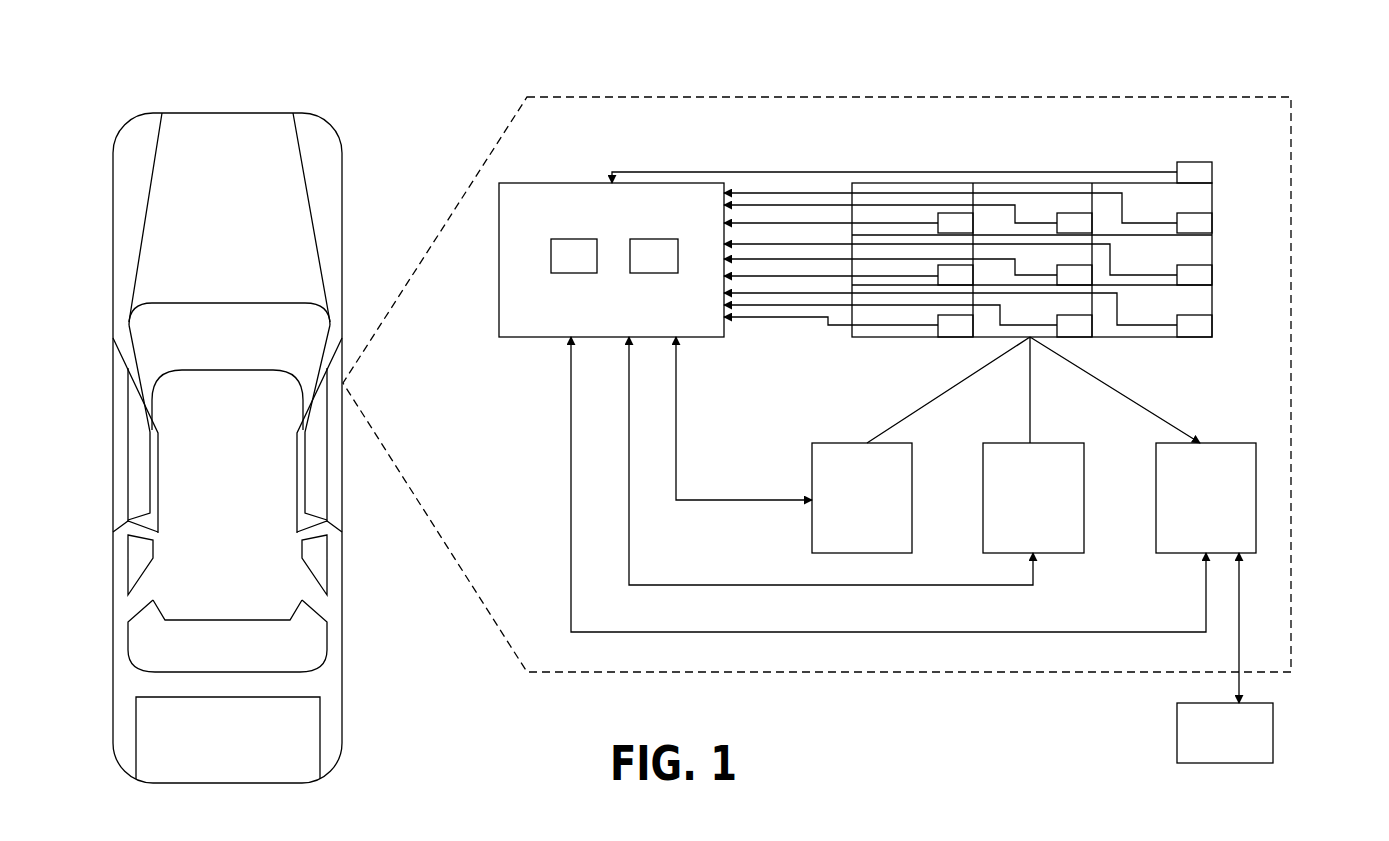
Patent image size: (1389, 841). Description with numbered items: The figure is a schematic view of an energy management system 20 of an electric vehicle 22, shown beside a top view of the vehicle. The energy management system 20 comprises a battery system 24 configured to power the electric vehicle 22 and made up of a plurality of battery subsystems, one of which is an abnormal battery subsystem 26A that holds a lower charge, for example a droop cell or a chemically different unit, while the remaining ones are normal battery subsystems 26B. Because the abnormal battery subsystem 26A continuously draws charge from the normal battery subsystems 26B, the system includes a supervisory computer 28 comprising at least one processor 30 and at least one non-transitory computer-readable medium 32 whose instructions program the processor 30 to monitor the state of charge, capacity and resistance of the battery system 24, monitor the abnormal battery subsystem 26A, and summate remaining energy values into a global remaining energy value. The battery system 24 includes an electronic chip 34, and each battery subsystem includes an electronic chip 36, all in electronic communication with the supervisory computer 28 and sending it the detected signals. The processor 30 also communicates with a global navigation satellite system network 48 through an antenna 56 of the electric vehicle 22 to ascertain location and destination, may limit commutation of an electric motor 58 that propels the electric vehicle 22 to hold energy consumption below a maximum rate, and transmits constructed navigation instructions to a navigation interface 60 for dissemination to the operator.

The energy management system 20 is at (1091, 92).
The electric vehicle 22 is at (172, 237).
The battery system 24 is at (1226, 243).
The abnormal battery subsystem 26A is at (1200, 310).
The normal battery subsystems 26B is at (1147, 210).
The supervisory computer 28 is at (518, 215).
The processor 30 is at (566, 256).
The non-transitory computer-readable medium 32 is at (643, 262).
The electronic chip 34 is at (1193, 172).
The electronic chip 36 is at (1195, 222).
The global navigation satellite system network 48 is at (1255, 738).
The antenna 56 is at (1247, 509).
The electric motor 58 is at (1055, 541).
The navigation interface 60 is at (820, 533).